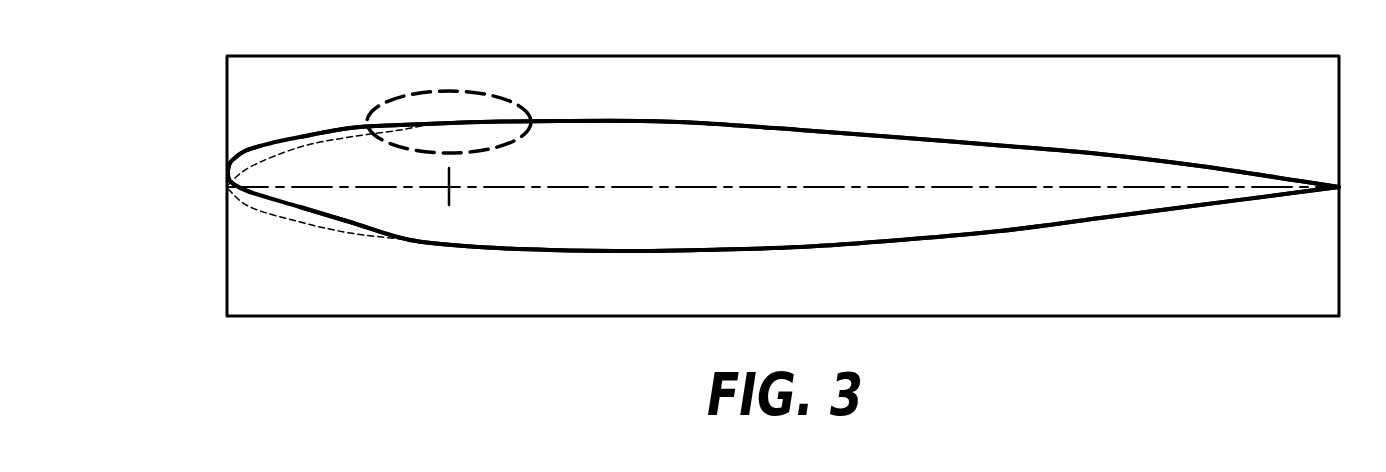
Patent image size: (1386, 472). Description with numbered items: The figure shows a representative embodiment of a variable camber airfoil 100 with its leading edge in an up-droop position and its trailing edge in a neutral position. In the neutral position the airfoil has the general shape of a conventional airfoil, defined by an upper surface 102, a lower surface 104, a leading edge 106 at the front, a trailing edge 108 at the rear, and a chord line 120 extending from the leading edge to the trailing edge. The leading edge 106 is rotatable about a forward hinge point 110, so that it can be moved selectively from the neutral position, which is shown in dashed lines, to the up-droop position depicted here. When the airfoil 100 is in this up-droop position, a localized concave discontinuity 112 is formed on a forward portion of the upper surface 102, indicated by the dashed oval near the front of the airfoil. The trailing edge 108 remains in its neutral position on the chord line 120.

The variable camber airfoil 100 is at (869, 127).
The upper surface 102 is at (635, 120).
The lower surface 104 is at (676, 254).
The leading edge 106 is at (268, 136).
The trailing edge 108 is at (1296, 179).
The forward hinge point 110 is at (413, 240).
The localized concave discontinuity 112 is at (431, 91).
The chord line 120 is at (744, 186).